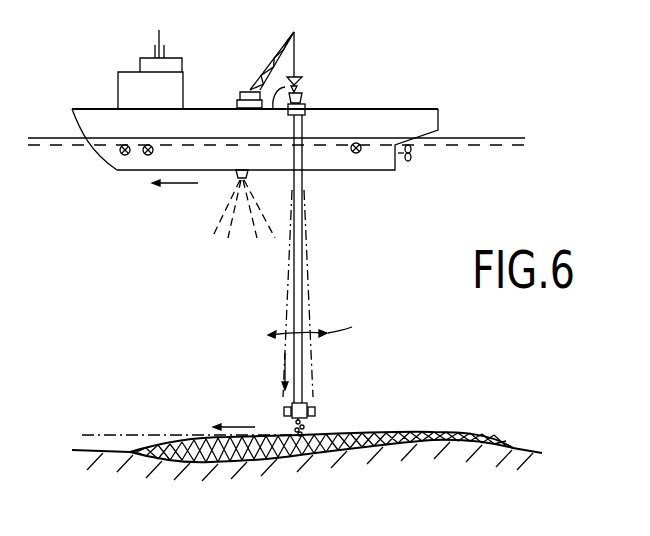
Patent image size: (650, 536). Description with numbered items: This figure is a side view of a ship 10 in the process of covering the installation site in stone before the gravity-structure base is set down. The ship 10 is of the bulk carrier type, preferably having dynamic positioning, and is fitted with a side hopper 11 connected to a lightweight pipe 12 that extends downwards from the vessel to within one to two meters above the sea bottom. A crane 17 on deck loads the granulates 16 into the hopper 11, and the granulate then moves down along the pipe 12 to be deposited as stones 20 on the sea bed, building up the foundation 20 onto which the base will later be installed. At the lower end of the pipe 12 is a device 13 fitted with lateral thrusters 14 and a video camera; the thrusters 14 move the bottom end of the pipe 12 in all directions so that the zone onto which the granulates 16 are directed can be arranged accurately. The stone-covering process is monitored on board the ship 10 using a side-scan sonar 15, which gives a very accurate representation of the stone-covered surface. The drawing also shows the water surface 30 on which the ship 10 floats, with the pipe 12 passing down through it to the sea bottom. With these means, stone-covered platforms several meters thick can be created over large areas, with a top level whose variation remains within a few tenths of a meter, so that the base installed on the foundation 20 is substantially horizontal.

The ship 10 is at (433, 108).
The side hopper 11 is at (308, 102).
The lightweight pipe 12 is at (303, 228).
The device 13 is at (313, 402).
The lateral thrusters 14 is at (287, 410).
The side-scan sonar 15 is at (222, 175).
The granulates 16 is at (298, 87).
The crane 17 is at (275, 53).
The stones / foundation 20 is at (473, 432).
The water surface 30 is at (508, 137).